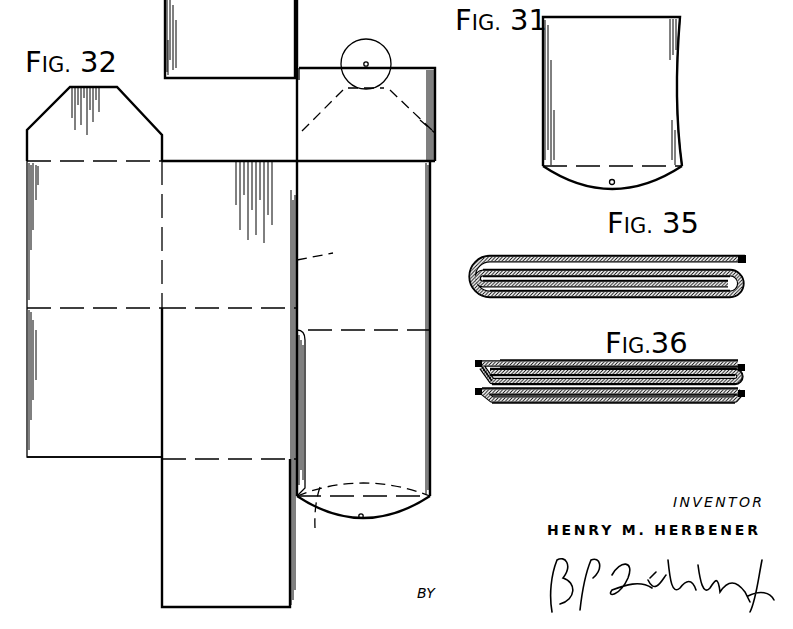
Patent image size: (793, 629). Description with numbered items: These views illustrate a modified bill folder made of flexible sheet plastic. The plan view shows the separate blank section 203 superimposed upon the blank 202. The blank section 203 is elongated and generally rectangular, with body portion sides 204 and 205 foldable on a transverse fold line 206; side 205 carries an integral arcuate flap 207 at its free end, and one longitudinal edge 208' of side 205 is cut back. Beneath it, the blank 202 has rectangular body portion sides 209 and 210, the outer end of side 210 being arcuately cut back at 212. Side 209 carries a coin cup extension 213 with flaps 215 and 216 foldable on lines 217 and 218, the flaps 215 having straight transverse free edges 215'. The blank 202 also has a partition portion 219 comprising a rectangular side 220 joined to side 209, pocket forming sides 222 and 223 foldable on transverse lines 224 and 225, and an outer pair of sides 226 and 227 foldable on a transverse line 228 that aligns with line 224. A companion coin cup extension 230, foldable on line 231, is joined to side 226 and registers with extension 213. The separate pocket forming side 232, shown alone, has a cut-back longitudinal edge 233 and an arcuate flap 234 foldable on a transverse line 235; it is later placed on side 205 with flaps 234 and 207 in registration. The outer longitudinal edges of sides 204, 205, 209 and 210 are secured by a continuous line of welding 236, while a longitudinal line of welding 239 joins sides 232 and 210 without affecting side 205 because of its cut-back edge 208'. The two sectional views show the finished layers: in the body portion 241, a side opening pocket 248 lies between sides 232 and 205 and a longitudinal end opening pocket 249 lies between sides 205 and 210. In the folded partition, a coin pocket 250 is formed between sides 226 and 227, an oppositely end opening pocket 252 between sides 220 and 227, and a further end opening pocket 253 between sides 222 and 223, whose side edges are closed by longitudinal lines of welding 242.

In FIG. 32, the blank 202 is at (247, 161).
In FIG. 32, the blank section 203 is at (413, 197).
In FIG. 32, the body portion side 204 is at (405, 220).
In FIG. 35, the body portion side 204 is at (527, 256).
In FIG. 32, the body portion side 205 is at (413, 420).
In FIG. 36, the body portion side 205 is at (594, 356).
In FIG. 32, the transverse fold line 206 is at (375, 332).
In FIG. 32, the arcuate flap 207 is at (397, 510).
In FIG. 32, the longitudinal edge 208' is at (328, 413).
In FIG. 36, the longitudinal edge 208' is at (466, 378).
In FIG. 32, the body portion side 209 is at (297, 261).
In FIG. 35, the body portion side 209 is at (565, 256).
In FIG. 32, the body portion side 210 is at (300, 395).
In FIG. 36, the body portion side 210 is at (533, 360).
In FIG. 32, the arcuate cut back 212 is at (363, 516).
In FIG. 32, the coin cup extension 213 is at (422, 145).
In FIG. 32, the flap 215 is at (389, 92).
In FIG. 32, the straight transverse free edge 215' is at (387, 44).
In FIG. 32, the flap 216 is at (380, 62).
In FIG. 32, the fold line 217 is at (412, 115).
In FIG. 32, the fold line 218 is at (377, 90).
In FIG. 32, the partition portion 219 is at (92, 442).
In FIG. 35, the partition portion 219 is at (613, 299).
In FIG. 32, the rectangular section or side 220 is at (233, 249).
In FIG. 35, the rectangular section or side 220 is at (668, 299).
In FIG. 32, the pocket forming side 222 is at (225, 427).
In FIG. 36, the pocket forming side 222 is at (593, 395).
In FIG. 32, the pocket forming side 223 is at (240, 554).
In FIG. 36, the pocket forming side 223 is at (628, 403).
In FIG. 32, the transverse fold line 224 is at (218, 310).
In FIG. 32, the transverse fold line 225 is at (195, 460).
In FIG. 32, the partition side 226 is at (96, 249).
In FIG. 35, the partition side 226 is at (550, 278).
In FIG. 32, the partition side 227 is at (97, 402).
In FIG. 35, the partition side 227 is at (580, 288).
In FIG. 32, the transverse fold line 228 is at (100, 309).
In FIG. 32, the coin cup extension 230 is at (135, 122).
In FIG. 32, the transverse fold line 231 is at (80, 163).
In FIG. 31, the pocket forming side 232 is at (662, 65).
In FIG. 36, the pocket forming side 232 is at (698, 379).
In FIG. 31, the longitudinal edge 233 is at (677, 105).
In FIG. 36, the longitudinal edge 233 is at (736, 382).
In FIG. 31, the arcuate flap 234 is at (650, 175).
In FIG. 31, the transverse fold line 235 is at (665, 167).
In FIG. 32, the line of welding 236 is at (431, 237).
In FIG. 35, the line of welding 236 is at (743, 256).
In FIG. 36, the line of welding 236 is at (743, 363).
In FIG. 36, the line of welding 239 is at (478, 359).
In FIG. 35, the body portion 241 is at (597, 256).
In FIG. 36, the body portion 241 is at (686, 358).
In FIG. 36, the lines of welding 242 is at (477, 396).
In FIG. 36, the side opening pocket 248 is at (672, 383).
In FIG. 36, the end opening pocket 249 is at (513, 360).
In FIG. 35, the coin pocket 250 is at (688, 280).
In FIG. 35, the end opening pocket 252 is at (717, 297).
In FIG. 36, the end opening pocket 253 is at (563, 403).